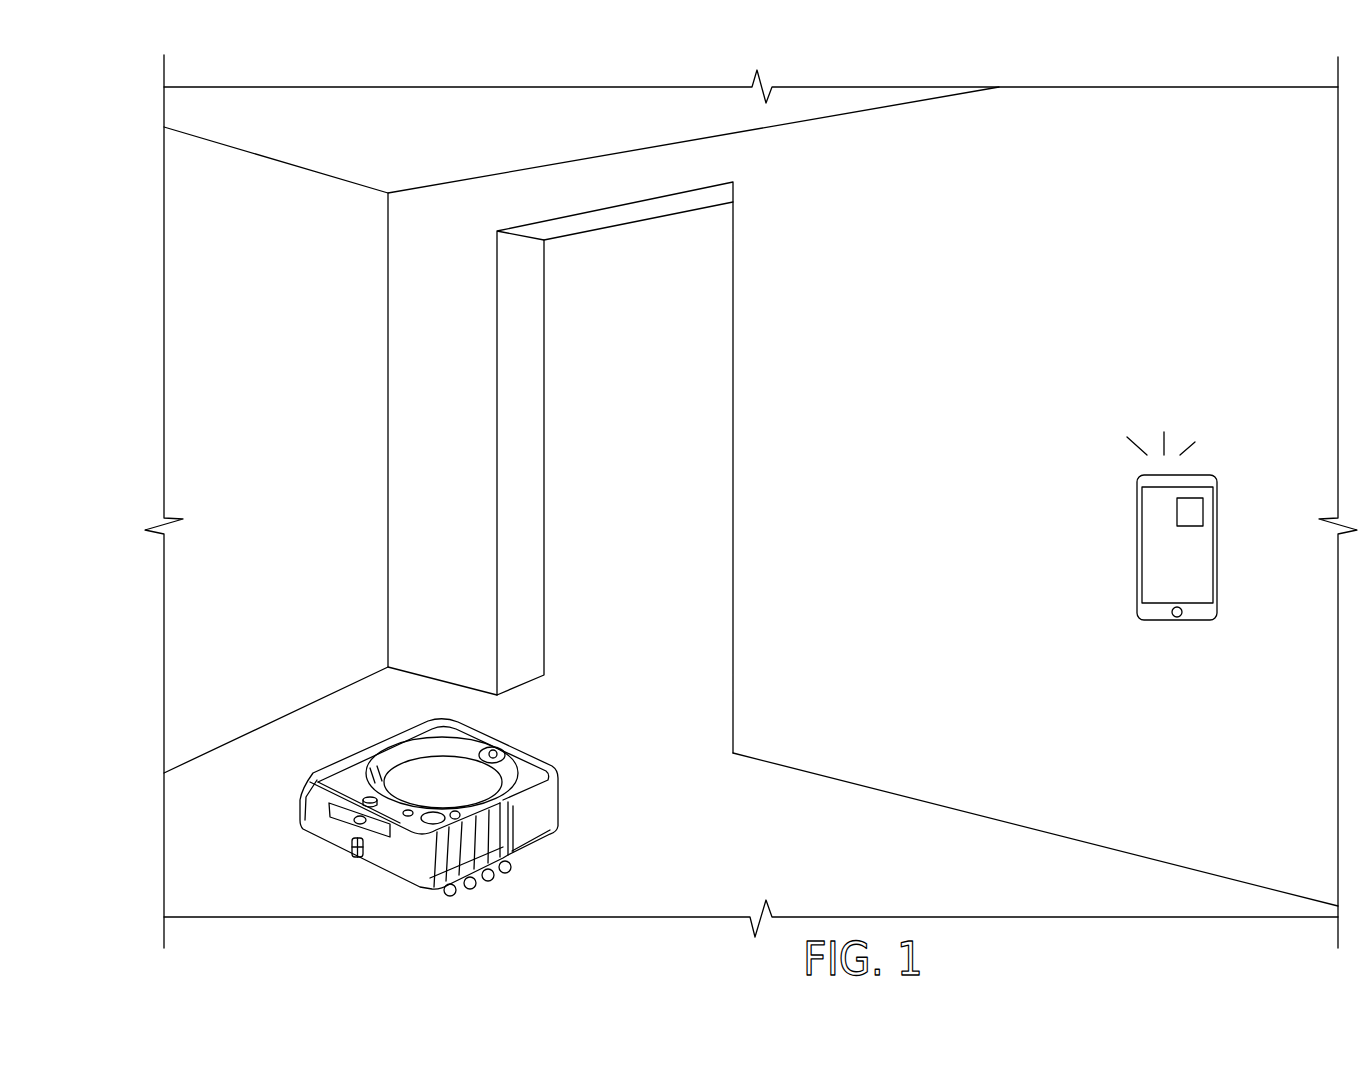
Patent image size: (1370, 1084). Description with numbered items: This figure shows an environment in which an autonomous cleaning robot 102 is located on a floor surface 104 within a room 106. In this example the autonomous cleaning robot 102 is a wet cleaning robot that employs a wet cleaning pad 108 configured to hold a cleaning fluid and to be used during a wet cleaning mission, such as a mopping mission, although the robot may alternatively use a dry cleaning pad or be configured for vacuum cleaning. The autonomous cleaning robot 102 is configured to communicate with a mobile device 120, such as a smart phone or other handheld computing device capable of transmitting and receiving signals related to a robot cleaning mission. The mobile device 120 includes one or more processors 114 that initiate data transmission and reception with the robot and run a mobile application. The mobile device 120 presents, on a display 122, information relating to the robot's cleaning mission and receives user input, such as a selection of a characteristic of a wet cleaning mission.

The autonomous cleaning robot 102 is at (457, 832).
The floor surface 104 is at (891, 877).
The room 106 is at (401, 163).
The wet cleaning pad 108 is at (460, 887).
The processors 114 is at (1190, 510).
The mobile device 120 is at (1178, 526).
The display 122 is at (1198, 598).